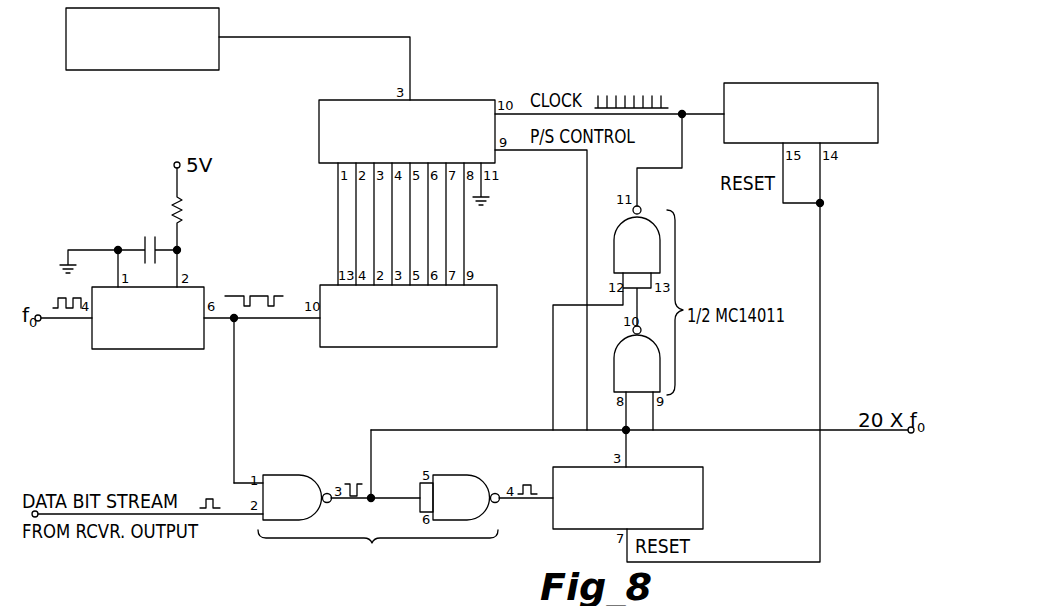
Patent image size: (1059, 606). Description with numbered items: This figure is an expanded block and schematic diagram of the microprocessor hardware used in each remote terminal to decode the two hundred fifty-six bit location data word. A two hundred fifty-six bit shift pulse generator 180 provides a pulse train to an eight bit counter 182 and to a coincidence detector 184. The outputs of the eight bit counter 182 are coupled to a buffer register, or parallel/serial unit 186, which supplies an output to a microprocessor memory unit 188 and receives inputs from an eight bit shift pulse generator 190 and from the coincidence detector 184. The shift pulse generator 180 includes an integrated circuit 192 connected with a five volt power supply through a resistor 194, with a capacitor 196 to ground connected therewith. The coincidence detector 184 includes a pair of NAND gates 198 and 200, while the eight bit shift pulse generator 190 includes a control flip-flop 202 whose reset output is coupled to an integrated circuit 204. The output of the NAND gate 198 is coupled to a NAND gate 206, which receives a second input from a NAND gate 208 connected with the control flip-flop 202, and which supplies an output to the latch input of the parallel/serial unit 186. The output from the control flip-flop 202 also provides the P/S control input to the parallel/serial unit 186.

The 256 bit shift pulse generator 180 is at (150, 366).
The 8 bit counter 182 is at (397, 347).
The coincidence detector 184 is at (403, 504).
The parallel/serial unit 186 is at (444, 100).
The microprocessor memory unit 188 is at (166, 70).
The 8 bit shift pulse generator 190 is at (745, 566).
The integrated circuit 192 is at (190, 349).
The resistor 194 is at (186, 210).
The capacitor 196 is at (143, 237).
The NAND gate 198 is at (303, 460).
The NAND gate 200 is at (450, 475).
The control flip-flop 202 is at (703, 505).
The integrated circuit 204 is at (806, 83).
The NAND gate 206 is at (642, 209).
The NAND gate 208 is at (632, 331).